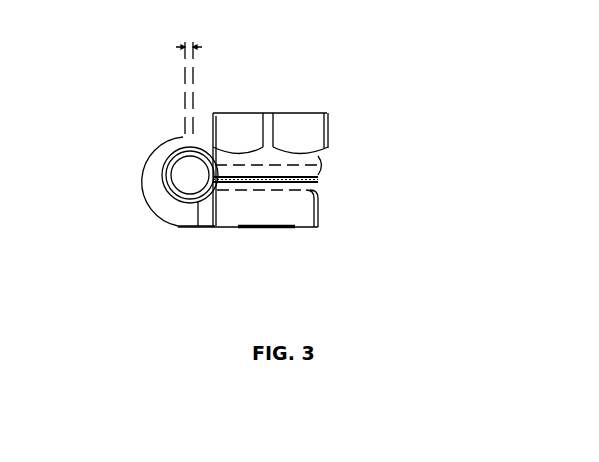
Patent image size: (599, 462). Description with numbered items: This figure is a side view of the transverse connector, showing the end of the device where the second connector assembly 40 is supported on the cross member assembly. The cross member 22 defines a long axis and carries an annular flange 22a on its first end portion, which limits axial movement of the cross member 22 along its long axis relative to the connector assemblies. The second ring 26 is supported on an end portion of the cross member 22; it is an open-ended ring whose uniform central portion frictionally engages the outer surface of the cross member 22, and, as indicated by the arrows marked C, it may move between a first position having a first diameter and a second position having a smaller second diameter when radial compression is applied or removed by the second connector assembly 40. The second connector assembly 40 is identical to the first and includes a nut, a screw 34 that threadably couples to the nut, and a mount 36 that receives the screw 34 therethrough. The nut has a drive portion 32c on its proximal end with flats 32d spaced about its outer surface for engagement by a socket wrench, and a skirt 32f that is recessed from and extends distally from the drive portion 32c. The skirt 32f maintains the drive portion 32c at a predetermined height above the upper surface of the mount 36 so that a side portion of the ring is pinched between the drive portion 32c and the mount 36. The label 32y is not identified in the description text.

The cross member 22 is at (187, 177).
The annular flange 22a is at (170, 167).
The second ring 26 is at (197, 145).
The drive portion 32c is at (333, 128).
The flats 32d is at (300, 123).
The skirt 32f is at (317, 172).
The neck 32y is at (318, 164).
The screw 34 is at (287, 228).
The mount 36 is at (325, 213).
The second connector assembly 40 is at (252, 170).